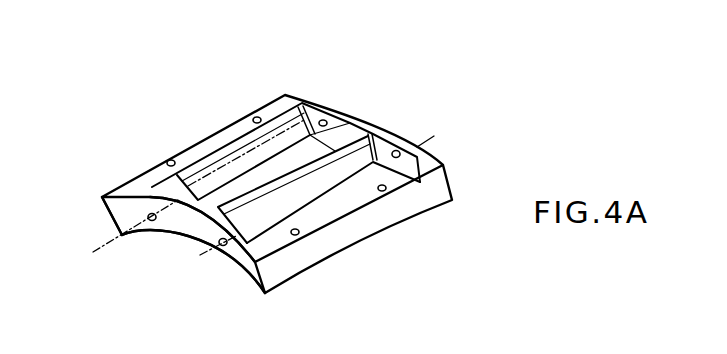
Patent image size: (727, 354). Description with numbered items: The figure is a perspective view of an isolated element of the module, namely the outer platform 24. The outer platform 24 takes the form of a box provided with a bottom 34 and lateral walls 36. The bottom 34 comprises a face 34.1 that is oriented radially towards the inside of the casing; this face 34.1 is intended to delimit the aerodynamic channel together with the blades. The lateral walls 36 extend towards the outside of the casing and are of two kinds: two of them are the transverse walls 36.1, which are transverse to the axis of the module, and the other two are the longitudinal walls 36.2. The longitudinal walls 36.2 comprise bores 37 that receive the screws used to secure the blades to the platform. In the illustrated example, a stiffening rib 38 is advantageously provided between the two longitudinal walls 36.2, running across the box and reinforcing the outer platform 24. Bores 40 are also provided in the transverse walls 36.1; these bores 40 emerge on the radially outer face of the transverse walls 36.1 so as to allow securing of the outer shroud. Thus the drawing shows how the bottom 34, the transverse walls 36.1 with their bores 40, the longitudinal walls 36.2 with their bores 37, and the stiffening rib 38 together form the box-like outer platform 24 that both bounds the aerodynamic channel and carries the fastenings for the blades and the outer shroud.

The outer platform 24 is at (405, 105).
The bottom 34 is at (322, 190).
The face 34.1 is at (242, 261).
The lateral walls 36 is at (332, 100).
The transverse walls 36.1 is at (407, 203).
The longitudinal walls 36.2 is at (132, 210).
The bores 37 is at (108, 238).
The stiffening rib 38 is at (363, 117).
The bores 40 is at (254, 116).